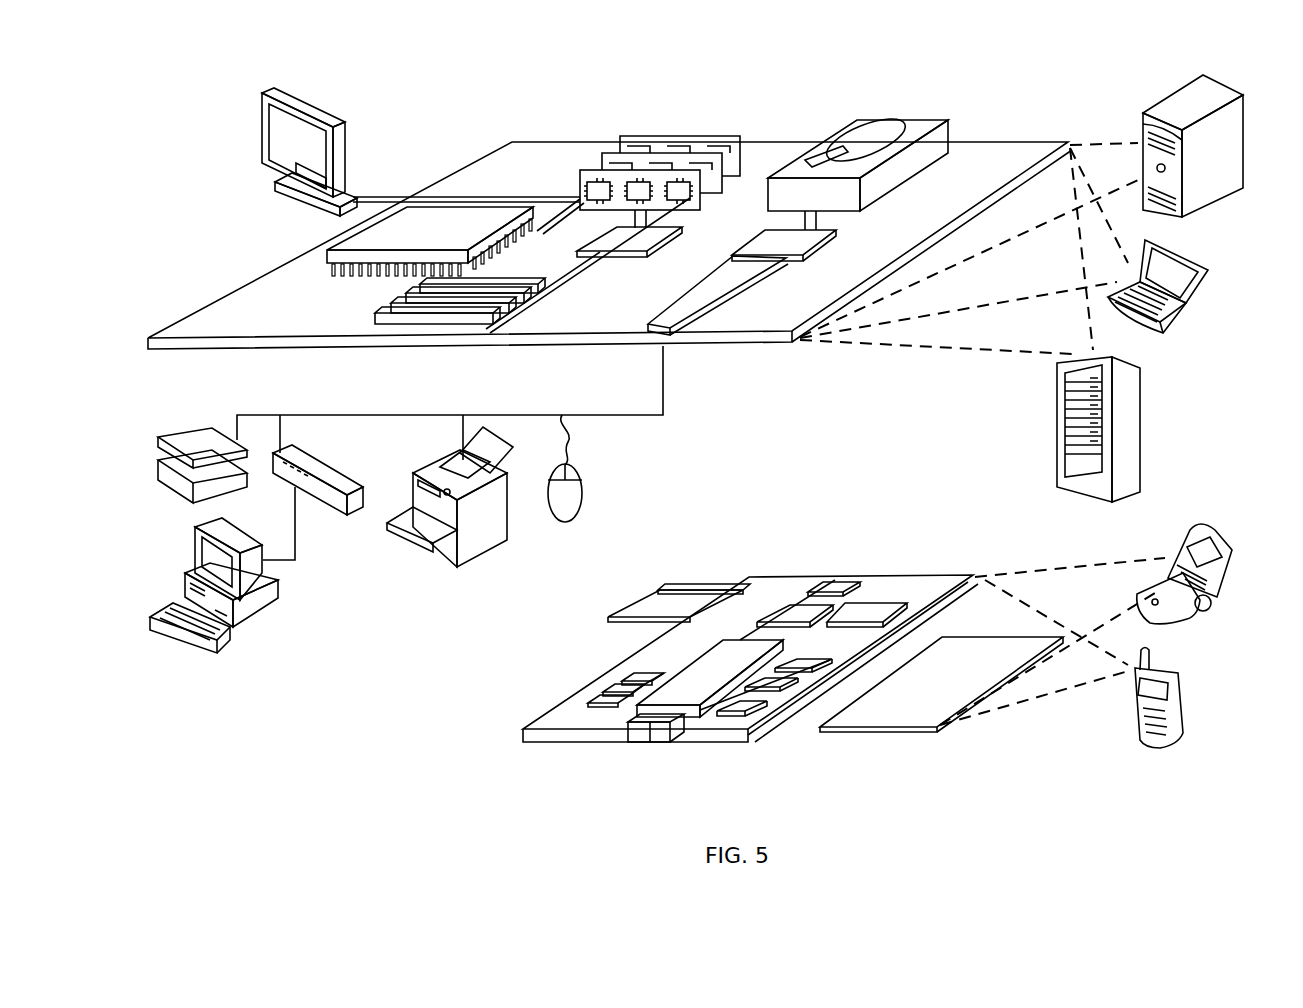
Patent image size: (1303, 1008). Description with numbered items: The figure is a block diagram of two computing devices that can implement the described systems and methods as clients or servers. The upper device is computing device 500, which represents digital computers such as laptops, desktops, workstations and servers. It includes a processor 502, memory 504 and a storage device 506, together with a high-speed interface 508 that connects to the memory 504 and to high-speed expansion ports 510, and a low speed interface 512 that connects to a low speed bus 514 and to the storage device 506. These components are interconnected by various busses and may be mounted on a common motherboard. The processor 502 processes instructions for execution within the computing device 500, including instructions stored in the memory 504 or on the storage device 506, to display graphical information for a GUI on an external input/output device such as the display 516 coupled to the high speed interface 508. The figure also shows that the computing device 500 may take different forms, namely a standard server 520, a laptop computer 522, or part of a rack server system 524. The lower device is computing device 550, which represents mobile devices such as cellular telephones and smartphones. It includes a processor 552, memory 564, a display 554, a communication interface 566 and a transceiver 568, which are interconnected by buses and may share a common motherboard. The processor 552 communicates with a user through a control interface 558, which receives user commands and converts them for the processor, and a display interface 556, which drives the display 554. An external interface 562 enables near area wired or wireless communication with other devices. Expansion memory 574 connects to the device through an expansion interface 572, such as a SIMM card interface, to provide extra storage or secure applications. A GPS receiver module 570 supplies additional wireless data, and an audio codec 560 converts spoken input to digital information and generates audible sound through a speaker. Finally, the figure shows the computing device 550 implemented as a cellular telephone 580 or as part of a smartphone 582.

The computing device 500 is at (443, 113).
The processor 502 is at (328, 252).
The memory 504 is at (635, 138).
The storage device 506 is at (855, 133).
The high-speed interface 508 is at (600, 233).
The high-speed expansion ports 510 is at (378, 312).
The low speed interface 512 is at (768, 240).
The low speed bus 514 is at (663, 330).
The display 516 is at (270, 93).
The standard server 520 is at (1143, 124).
The laptop computer 522 is at (1204, 265).
The rack server system 524 is at (1058, 448).
The computing device 550 is at (496, 745).
The processor 552 is at (682, 692).
The display 554 is at (903, 716).
The display interface 556 is at (742, 706).
The control interface 558 is at (788, 690).
The audio codec 560 is at (800, 670).
The external interface 562 is at (652, 724).
The memory 564 is at (602, 692).
The communication interface 566 is at (796, 612).
The transceiver 568 is at (868, 610).
The GPS receiver module 570 is at (843, 578).
The expansion interface 572 is at (736, 589).
The expansion memory 574 is at (664, 591).
The cellular telephone 580 is at (1180, 545).
The smartphone 582 is at (1134, 706).